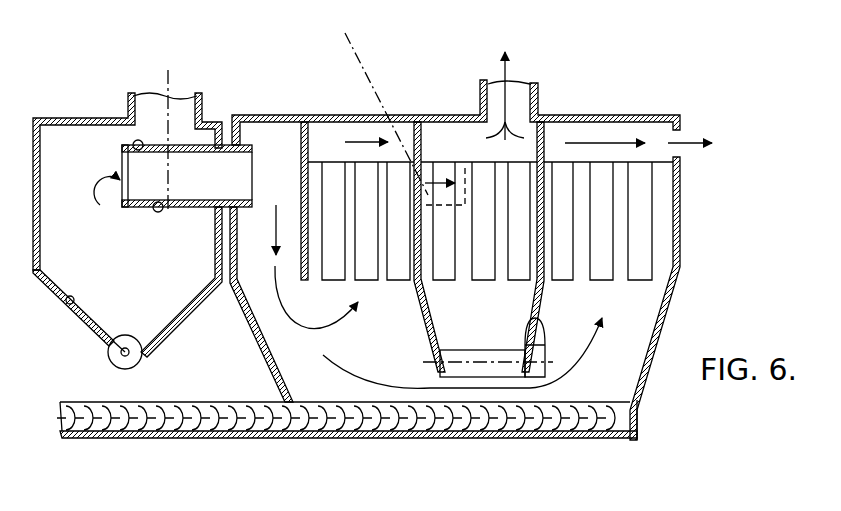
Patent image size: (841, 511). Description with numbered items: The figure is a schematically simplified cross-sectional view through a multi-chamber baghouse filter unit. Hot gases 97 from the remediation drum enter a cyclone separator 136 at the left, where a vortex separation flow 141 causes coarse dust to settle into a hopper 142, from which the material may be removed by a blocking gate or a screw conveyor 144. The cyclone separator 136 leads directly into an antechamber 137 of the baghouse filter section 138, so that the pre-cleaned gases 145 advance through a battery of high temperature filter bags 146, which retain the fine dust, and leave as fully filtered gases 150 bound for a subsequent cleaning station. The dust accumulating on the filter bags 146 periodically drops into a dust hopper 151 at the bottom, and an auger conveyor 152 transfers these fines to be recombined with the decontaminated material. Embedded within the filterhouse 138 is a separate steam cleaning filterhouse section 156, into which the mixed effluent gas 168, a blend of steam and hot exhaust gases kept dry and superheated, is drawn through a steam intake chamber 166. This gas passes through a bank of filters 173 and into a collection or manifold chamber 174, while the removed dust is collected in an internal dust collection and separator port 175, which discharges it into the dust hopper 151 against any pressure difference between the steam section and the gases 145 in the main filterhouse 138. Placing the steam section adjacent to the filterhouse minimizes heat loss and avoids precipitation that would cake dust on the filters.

The cyclone separator 136 is at (62, 118).
The gases 97 is at (172, 100).
The antechamber 137 is at (263, 130).
The pre-cleaned gases 145 is at (254, 178).
The vortex separation flow 141 is at (100, 205).
The hopper 142 is at (66, 300).
The screw conveyor 144 is at (108, 362).
The auger conveyor 152 is at (238, 438).
The mixed effluent gas 168 is at (358, 40).
The steam intake chamber 166 is at (440, 180).
The collection or manifold chamber 174 is at (524, 102).
The fully filtered gases 150 is at (607, 140).
The steam cleaning filterhouse section 156 is at (545, 176).
The filter bags 146 is at (367, 275).
The bank of filters 173 is at (485, 275).
The dust collection and separator port 175 is at (440, 377).
The baghouse filter section 138 is at (647, 308).
The dust hopper 151 is at (625, 383).